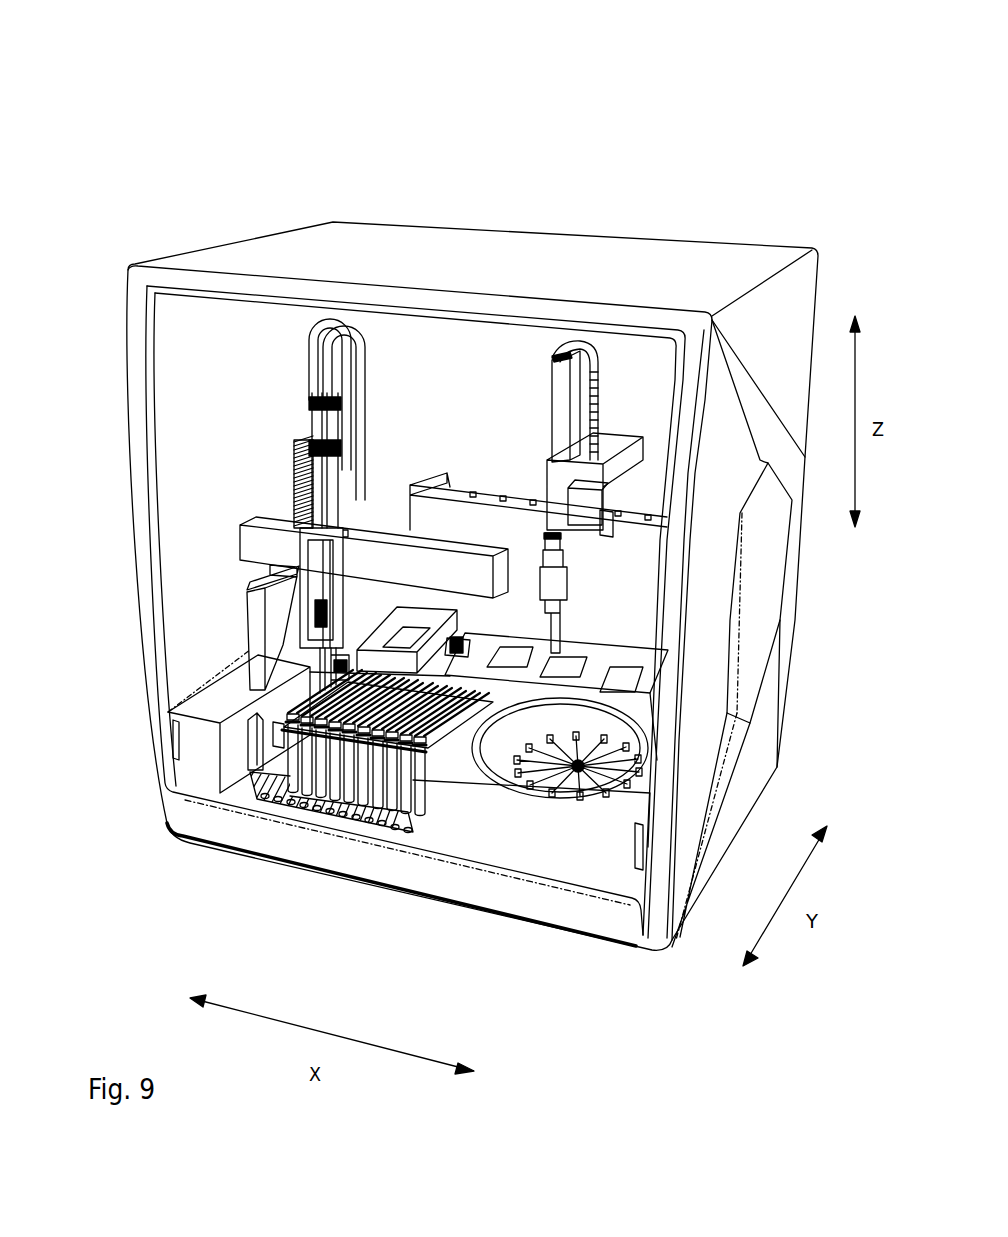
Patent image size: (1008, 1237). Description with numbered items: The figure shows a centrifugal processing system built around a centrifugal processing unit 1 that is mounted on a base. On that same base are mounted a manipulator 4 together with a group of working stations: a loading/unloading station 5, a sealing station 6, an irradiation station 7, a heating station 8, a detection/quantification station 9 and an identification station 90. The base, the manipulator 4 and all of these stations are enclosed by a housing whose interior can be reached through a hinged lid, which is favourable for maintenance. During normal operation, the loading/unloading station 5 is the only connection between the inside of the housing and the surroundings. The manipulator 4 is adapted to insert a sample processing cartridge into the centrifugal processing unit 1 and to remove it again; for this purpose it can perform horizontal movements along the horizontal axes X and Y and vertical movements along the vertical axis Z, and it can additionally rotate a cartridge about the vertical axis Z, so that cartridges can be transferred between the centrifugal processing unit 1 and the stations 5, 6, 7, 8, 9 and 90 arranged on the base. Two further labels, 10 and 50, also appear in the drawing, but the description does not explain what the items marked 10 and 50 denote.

The analyzer instrument housing 10 is at (800, 152).
The irradiation station 7 is at (407, 637).
The heating station 8 is at (513, 640).
The manipulator 4 is at (593, 477).
The pipetting head 50 is at (318, 613).
The loading/unloading station 5 is at (335, 750).
The sealing station 6 is at (457, 655).
The centrifugal processing unit 1 is at (578, 780).
The detection/quantification station 9 is at (573, 660).
The identification station 90 is at (623, 673).